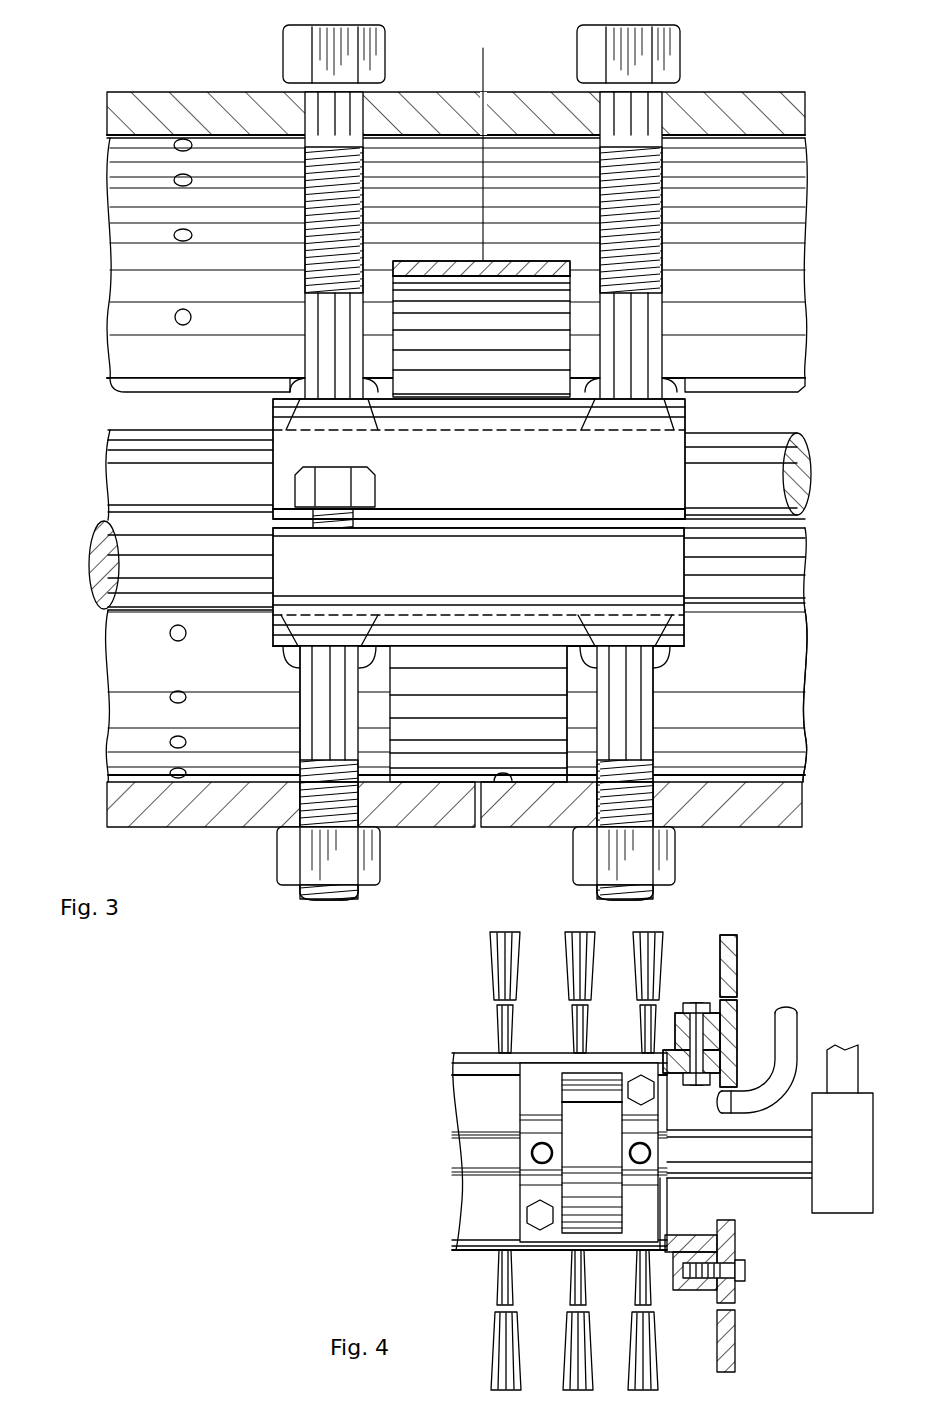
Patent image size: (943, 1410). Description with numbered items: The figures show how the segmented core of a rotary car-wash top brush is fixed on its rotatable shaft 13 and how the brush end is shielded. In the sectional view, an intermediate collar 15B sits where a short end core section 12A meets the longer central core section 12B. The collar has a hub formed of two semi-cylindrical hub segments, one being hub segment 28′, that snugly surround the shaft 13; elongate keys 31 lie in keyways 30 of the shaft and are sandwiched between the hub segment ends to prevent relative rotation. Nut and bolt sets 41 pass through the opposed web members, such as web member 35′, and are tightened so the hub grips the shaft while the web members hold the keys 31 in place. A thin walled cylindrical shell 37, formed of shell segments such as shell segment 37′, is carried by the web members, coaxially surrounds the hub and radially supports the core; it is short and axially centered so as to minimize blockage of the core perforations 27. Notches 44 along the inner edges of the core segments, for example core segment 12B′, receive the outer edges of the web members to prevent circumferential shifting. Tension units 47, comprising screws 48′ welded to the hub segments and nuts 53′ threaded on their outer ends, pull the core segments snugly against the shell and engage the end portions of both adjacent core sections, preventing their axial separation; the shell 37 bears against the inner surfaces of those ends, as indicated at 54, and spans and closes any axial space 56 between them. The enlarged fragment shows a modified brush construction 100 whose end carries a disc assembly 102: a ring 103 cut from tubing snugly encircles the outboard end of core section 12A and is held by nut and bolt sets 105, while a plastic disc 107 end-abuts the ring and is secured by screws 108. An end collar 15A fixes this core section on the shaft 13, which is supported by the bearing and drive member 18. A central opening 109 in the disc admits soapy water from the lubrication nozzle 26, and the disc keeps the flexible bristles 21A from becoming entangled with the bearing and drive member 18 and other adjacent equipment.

In FIG. 3, the axial space 56 is at (484, 90).
In FIG. 3, the notch 44 is at (150, 388).
In FIG. 3, the rotatable shaft 13 is at (112, 455).
In FIG. 4, the rotatable shaft 13 is at (728, 1155).
In FIG. 3, the nut and bolt set 41 is at (292, 490).
In FIG. 3, the key 31 is at (656, 532).
In FIG. 3, the web member 35′ is at (680, 532).
In FIG. 3, the keyway 30 is at (790, 530).
In FIG. 3, the intermediate collar 15B is at (705, 520).
In FIG. 3, the core perforation 27 is at (172, 634).
In FIG. 3, the tension unit 47 is at (296, 672).
In FIG. 3, the central core section 12B is at (107, 684).
In FIG. 3, the screw 48′ is at (318, 708).
In FIG. 3, the shell segment 37′ is at (505, 695).
In FIG. 3, the hub segment 28′ is at (680, 634).
In FIG. 3, the cylindrical shell 37 is at (572, 705).
In FIG. 3, the end core section 12A is at (803, 758).
In FIG. 4, the end core section 12A is at (568, 1062).
In FIG. 3, the semi-cylindrical core segment 12B′ is at (142, 830).
In FIG. 3, the nut 53′ is at (368, 875).
In FIG. 3, the bearing contact 54 is at (507, 782).
In FIG. 4, the bristles 21A is at (660, 940).
In FIG. 4, the modified brush construction 100 is at (698, 950).
In FIG. 4, the disc assembly 102 is at (740, 962).
In FIG. 4, the ring 103 is at (675, 1025).
In FIG. 4, the nut and bolt set 105 is at (694, 1002).
In FIG. 4, the end collar 15A is at (512, 1105).
In FIG. 4, the lubrication nozzle 26 is at (722, 1102).
In FIG. 4, the bearing and drive member 18 is at (843, 1216).
In FIG. 4, the central opening 109 is at (726, 1225).
In FIG. 4, the screw 108 is at (748, 1270).
In FIG. 4, the disc 107 is at (730, 1290).